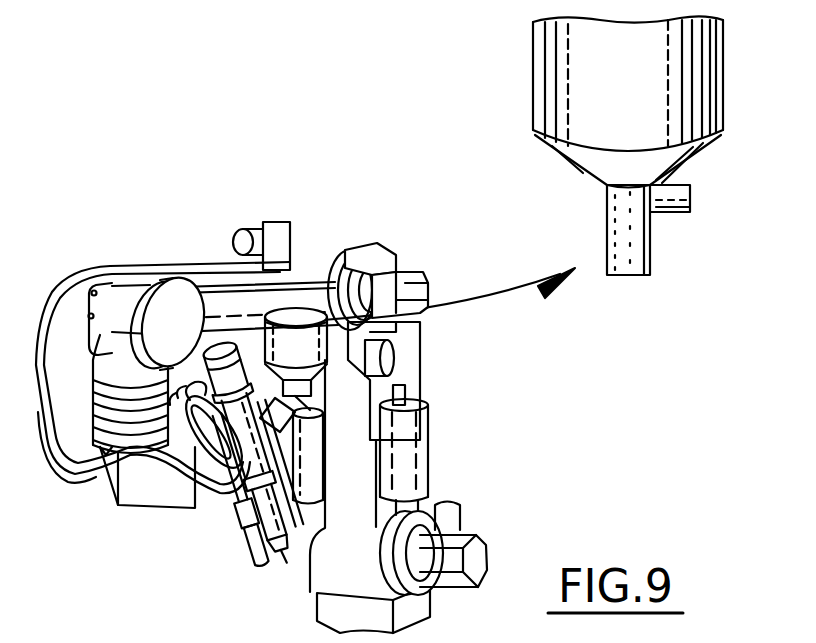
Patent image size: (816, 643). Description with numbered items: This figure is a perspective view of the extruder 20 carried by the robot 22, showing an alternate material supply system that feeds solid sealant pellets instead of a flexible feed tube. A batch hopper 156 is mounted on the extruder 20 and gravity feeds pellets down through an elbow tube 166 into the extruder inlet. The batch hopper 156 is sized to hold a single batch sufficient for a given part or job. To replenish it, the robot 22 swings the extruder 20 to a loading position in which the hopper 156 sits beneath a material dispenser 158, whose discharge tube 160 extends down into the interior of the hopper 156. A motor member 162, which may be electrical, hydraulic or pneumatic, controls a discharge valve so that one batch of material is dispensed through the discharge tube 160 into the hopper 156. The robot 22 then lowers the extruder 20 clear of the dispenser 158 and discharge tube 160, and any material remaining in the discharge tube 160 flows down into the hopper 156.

The extruder 20 is at (218, 563).
The robot 22 is at (160, 232).
The batch hopper 156 is at (288, 335).
The material dispenser 158 is at (724, 80).
The discharge tube 160 is at (648, 254).
The motor member 162 is at (656, 188).
The elbow tube 166 is at (300, 406).